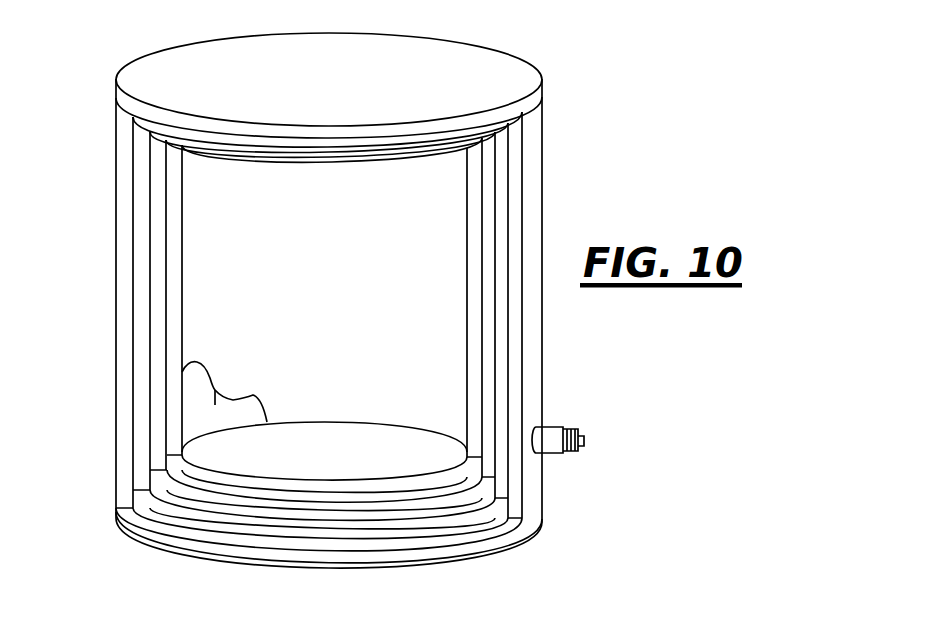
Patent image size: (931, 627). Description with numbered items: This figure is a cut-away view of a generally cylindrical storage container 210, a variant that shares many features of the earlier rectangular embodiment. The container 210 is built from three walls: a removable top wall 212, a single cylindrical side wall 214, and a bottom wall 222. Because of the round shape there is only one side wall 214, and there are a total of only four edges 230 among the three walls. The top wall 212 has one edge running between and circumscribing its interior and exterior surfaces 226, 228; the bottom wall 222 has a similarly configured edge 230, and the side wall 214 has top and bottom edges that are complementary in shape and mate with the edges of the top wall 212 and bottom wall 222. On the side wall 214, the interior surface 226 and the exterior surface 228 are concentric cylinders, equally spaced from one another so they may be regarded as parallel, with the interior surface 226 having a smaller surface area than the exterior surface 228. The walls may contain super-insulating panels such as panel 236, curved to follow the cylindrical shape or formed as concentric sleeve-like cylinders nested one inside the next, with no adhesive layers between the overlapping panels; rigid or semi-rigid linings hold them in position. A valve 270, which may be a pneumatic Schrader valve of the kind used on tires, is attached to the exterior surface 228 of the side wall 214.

The storage container 210 is at (353, 301).
The top wall 212 is at (182, 67).
The side wall 214 is at (532, 123).
The bottom wall 222 is at (513, 537).
The interior surface 226 is at (197, 362).
The exterior surface 228 is at (337, 58).
The edge 230 is at (182, 510).
The super-insulating panel 236 is at (215, 387).
The valve 270 is at (552, 435).